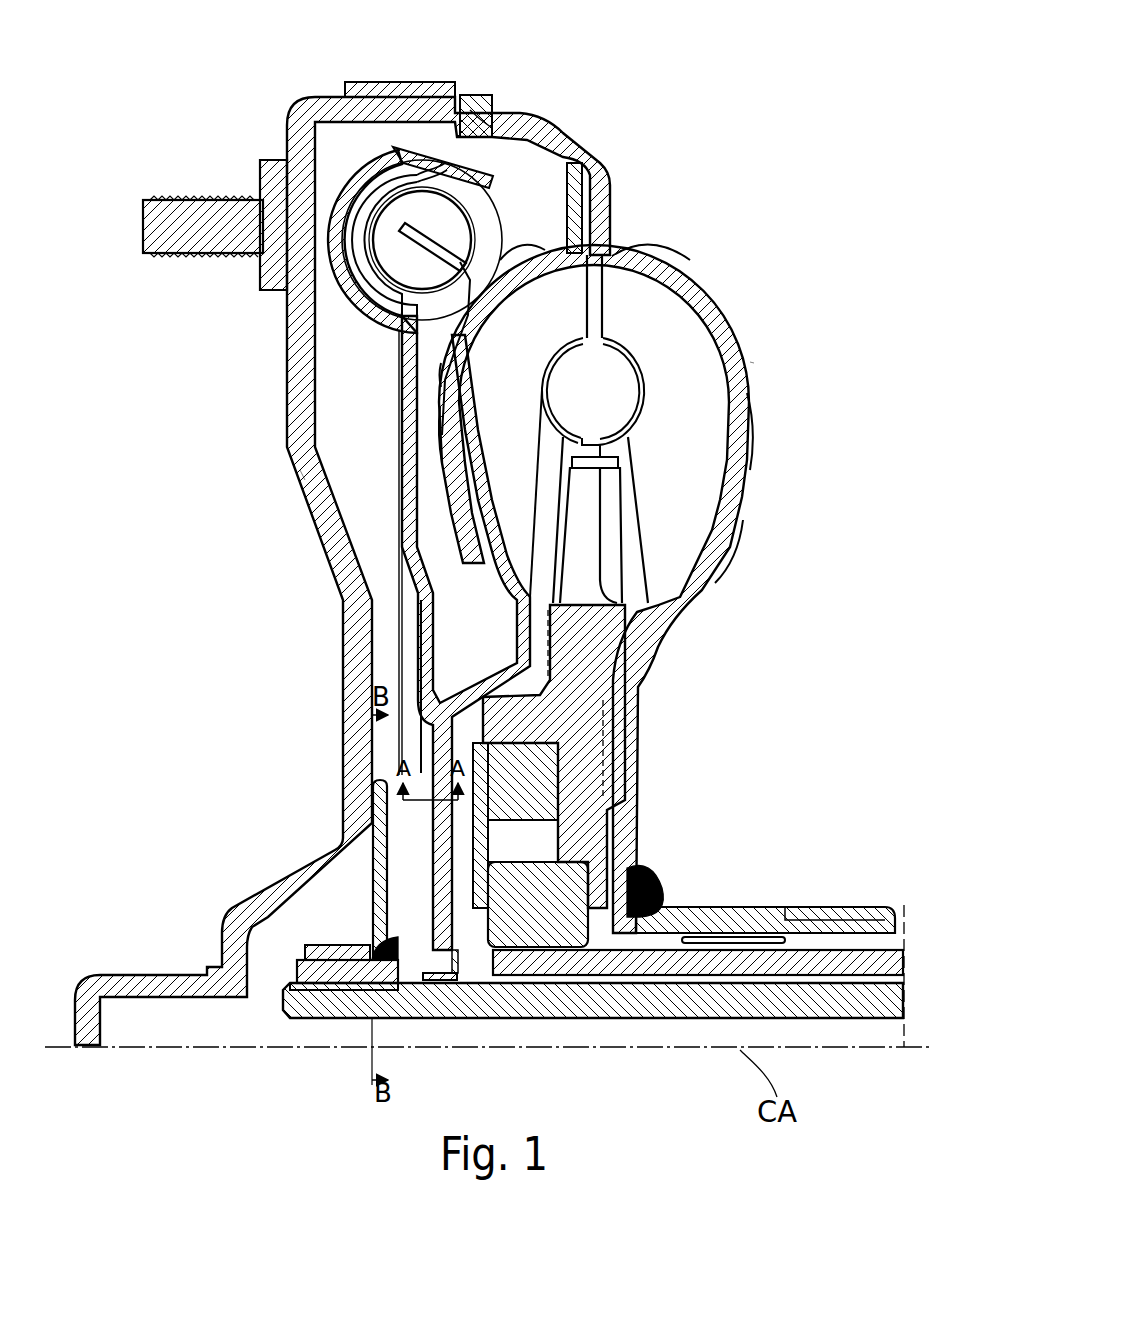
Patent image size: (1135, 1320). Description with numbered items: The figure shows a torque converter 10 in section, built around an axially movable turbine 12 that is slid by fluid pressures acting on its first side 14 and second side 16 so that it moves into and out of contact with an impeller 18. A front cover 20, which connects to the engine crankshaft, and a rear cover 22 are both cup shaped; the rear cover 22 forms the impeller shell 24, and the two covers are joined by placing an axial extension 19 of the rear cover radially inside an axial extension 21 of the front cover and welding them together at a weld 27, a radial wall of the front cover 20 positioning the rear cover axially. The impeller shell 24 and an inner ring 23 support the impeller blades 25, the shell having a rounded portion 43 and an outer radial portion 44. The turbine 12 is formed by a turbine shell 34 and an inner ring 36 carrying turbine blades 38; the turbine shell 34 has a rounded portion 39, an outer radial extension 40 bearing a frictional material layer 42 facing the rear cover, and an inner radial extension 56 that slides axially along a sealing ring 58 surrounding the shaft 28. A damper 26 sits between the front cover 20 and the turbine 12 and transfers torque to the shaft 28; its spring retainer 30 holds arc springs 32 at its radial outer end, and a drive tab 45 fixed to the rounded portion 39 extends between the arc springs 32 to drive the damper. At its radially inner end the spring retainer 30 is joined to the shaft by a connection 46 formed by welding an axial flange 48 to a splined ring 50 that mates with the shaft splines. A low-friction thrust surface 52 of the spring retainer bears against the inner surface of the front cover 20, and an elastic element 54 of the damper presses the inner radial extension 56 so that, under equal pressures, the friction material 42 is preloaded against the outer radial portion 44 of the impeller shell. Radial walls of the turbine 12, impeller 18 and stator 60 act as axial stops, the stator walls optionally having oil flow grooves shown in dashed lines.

The torque converter 10 is at (755, 96).
The turbine 12 is at (533, 240).
The first side 14 is at (452, 568).
The second side 16 is at (552, 508).
The impeller 18 is at (685, 245).
The axial extension 19 is at (505, 122).
The front cover 20 is at (308, 477).
The axial extension 21 is at (468, 98).
The rear cover 22 is at (712, 320).
The inner ring 23 is at (643, 378).
The impeller shell 24 is at (594, 333).
The impeller blades 25 is at (683, 437).
The damper 26 is at (352, 158).
The weld 27 is at (495, 128).
The shaft 28 is at (813, 990).
The spring retainer 30 is at (408, 519).
The arc springs 32 is at (362, 278).
The turbine shell 34 is at (410, 400).
The inner ring 36 is at (546, 378).
The turbine blades 38 is at (523, 437).
The rounded portion 39 is at (470, 498).
The outer radial extension 40 is at (582, 195).
The frictional material layer 42 is at (598, 150).
The rounded portion 43 is at (752, 362).
The outer radial portion 44 is at (605, 218).
The drive tab 45 is at (453, 352).
The connection 46 is at (308, 950).
The axial flange 48 is at (335, 947).
The splined ring 50 is at (293, 975).
The thrust surface 52 is at (372, 793).
The elastic element 54 is at (430, 630).
The inner radial extension 56 is at (440, 855).
The sealing ring 58 is at (457, 962).
The stator 60 is at (592, 745).